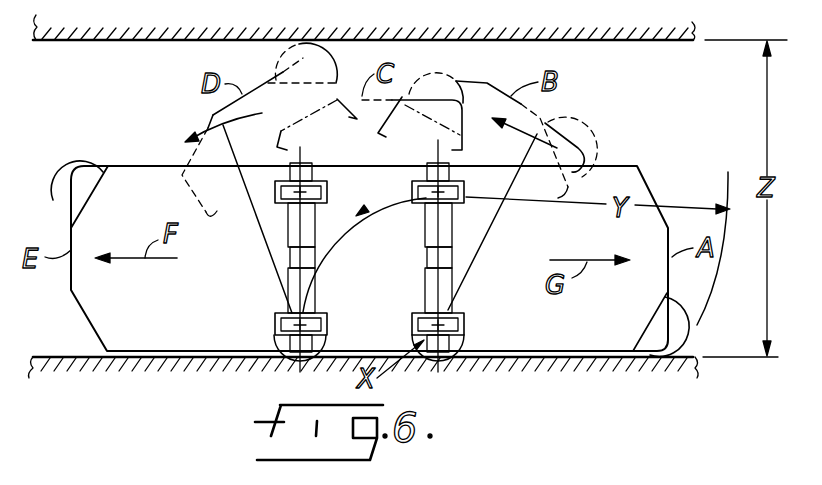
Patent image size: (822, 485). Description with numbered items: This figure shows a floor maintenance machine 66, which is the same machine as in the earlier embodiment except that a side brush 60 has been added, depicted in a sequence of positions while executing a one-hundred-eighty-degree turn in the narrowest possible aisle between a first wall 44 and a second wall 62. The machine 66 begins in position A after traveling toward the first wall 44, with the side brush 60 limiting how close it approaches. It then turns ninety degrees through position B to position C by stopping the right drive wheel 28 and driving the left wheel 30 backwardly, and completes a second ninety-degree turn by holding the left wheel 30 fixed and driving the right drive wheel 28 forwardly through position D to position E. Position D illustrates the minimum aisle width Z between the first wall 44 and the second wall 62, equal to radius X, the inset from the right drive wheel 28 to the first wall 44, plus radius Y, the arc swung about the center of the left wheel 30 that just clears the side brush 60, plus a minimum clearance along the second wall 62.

The second wall 62 is at (99, 42).
The first wall 44 is at (53, 328).
The machine 66 is at (643, 178).
The side brush 60 is at (683, 318).
The right drive wheel 28 is at (326, 192).
The left wheel 30 is at (325, 315).